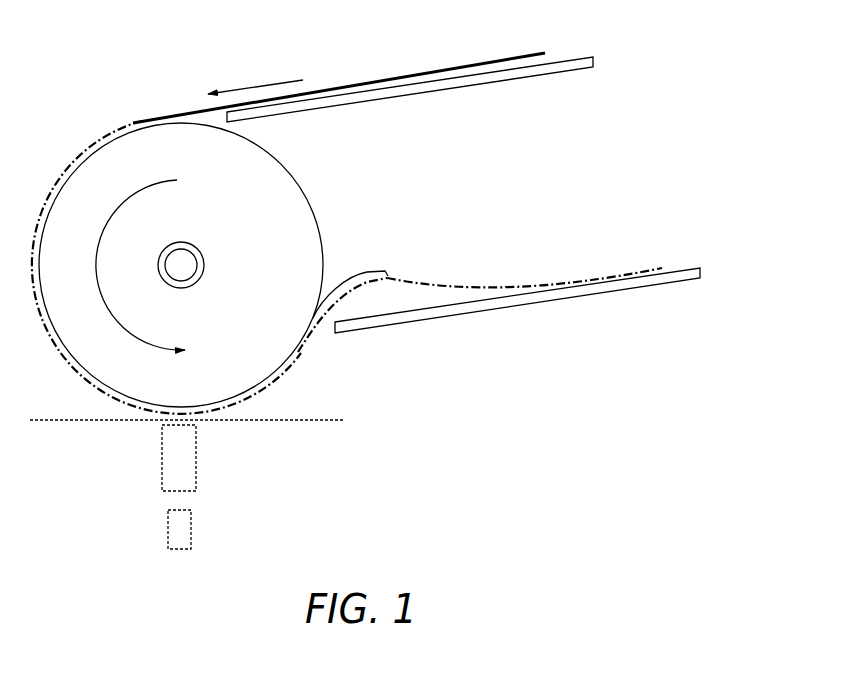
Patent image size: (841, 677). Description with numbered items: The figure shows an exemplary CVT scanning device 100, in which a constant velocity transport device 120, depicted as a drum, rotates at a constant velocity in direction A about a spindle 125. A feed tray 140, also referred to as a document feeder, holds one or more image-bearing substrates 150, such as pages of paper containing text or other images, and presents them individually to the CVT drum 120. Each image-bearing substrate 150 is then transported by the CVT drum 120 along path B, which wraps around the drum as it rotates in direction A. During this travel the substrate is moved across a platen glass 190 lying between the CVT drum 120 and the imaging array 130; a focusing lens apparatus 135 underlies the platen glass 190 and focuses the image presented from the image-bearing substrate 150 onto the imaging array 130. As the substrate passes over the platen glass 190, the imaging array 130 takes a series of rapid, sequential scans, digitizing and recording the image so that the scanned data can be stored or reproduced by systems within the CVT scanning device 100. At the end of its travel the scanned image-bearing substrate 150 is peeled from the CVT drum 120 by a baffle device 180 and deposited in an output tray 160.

The CVT scanning device 100 is at (117, 117).
The constant velocity transport device 120 is at (310, 203).
The spindle 125 is at (186, 260).
The imaging array 130 is at (191, 530).
The focusing lens apparatus 135 is at (197, 466).
The feed tray 140 is at (572, 59).
The image-bearing substrate 150 is at (418, 72).
The output tray 160 is at (675, 271).
The baffle device 180 is at (375, 270).
The platen glass 190 is at (312, 418).
The direction A is at (97, 242).
The path B is at (62, 168).